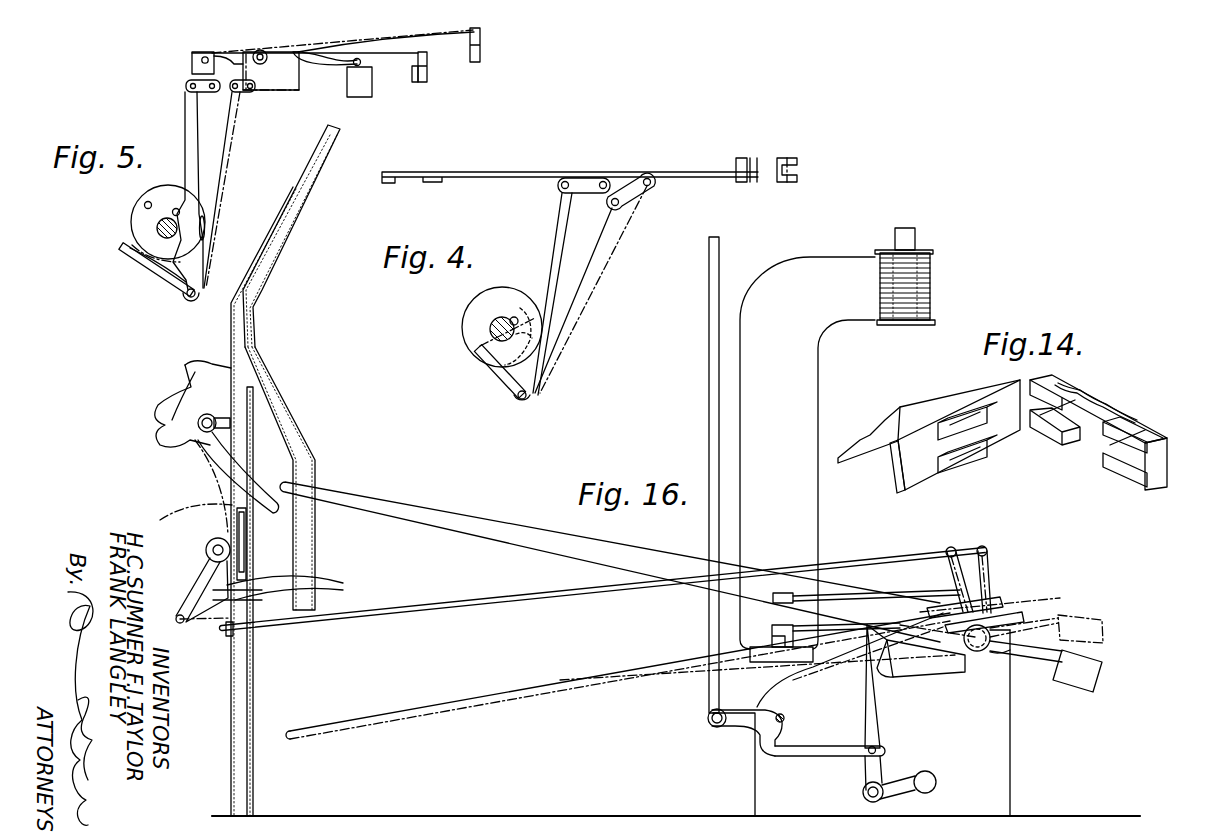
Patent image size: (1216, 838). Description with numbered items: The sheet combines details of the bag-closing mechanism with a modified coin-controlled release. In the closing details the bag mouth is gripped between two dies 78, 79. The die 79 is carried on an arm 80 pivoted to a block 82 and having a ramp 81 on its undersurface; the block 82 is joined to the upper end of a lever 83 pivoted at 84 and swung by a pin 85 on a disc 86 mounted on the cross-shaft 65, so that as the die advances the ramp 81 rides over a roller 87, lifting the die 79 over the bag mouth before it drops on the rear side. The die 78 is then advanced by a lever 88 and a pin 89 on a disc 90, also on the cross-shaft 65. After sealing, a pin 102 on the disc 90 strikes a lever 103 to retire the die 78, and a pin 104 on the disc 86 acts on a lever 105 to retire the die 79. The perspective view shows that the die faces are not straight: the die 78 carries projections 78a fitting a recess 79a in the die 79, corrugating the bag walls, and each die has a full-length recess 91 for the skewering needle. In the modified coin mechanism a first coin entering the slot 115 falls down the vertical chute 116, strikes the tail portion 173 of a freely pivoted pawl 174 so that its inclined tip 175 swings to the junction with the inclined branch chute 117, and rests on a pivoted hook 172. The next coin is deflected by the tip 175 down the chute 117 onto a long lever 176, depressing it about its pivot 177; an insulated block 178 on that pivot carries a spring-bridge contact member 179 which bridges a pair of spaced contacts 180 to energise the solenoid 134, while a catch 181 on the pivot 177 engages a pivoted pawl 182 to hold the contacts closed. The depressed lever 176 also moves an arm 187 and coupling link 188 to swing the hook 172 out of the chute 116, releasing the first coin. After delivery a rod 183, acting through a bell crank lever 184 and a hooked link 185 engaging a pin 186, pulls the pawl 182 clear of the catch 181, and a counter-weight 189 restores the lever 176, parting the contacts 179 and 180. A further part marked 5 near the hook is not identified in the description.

In FIG. 5, the arm 80 is at (193, 53).
In FIG. 5, the block 82 is at (202, 64).
In FIG. 5, the lever 83 is at (190, 132).
In FIG. 5, the pin 85 is at (175, 209).
In FIG. 5, the pin 104 is at (145, 204).
In FIG. 5, the disc 86 is at (138, 227).
In FIG. 5, the cross-shaft 65 is at (157, 237).
In FIG. 4, the cross-shaft 65 is at (490, 330).
In FIG. 5, the lever 105 is at (132, 253).
In FIG. 5, the pivot 84 is at (197, 292).
In FIG. 5, the ramp 81 is at (318, 57).
In FIG. 5, the roller 87 is at (361, 60).
In FIG. 5, the recess 91 is at (414, 72).
In FIG. 4, the recess 91 is at (760, 163).
In FIG. 14, the recess 91 is at (967, 430).
In FIG. 5, the die 79 is at (427, 80).
In FIG. 14, the die 79 is at (1163, 458).
In FIG. 4, the die 78 is at (752, 180).
In FIG. 14, the die 78 is at (927, 457).
In FIG. 14, the projections 78a is at (963, 458).
In FIG. 14, the recess 79a is at (1087, 423).
In FIG. 4, the lever 88 is at (557, 225).
In FIG. 4, the pin 89 is at (513, 316).
In FIG. 4, the disc 90 is at (475, 307).
In FIG. 4, the pin 102 is at (531, 337).
In FIG. 4, the lever 103 is at (490, 363).
In FIG. 16, the coin slot 115 is at (313, 167).
In FIG. 16, the vertical coin chute 116 is at (238, 455).
In FIG. 16, the inclined branch coin chute 117 is at (305, 463).
In FIG. 16, the inclined tip 175 is at (214, 425).
In FIG. 16, the pawl 174 is at (193, 457).
In FIG. 16, the tail portion 173 is at (203, 513).
In FIG. 16, the lever 5 is at (206, 553).
In FIG. 16, the pivoted hook 172 is at (304, 585).
In FIG. 16, the lever 176 is at (535, 540).
In FIG. 16, the coupling rod 188 is at (507, 602).
In FIG. 16, the rod 183 is at (708, 275).
In FIG. 16, the solenoid 134 is at (930, 290).
In FIG. 16, the spring-bridge contact member 179 is at (783, 593).
In FIG. 16, the spaced contacts 180 is at (777, 643).
In FIG. 16, the arm 187 is at (980, 577).
In FIG. 16, the insulated block 178 is at (1023, 618).
In FIG. 16, the pivot 177 is at (977, 653).
In FIG. 16, the catch 181 is at (922, 652).
In FIG. 16, the pivoted pawl 182 is at (870, 735).
In FIG. 16, the bell crank lever 184 is at (742, 720).
In FIG. 16, the hooked link 185 is at (827, 746).
In FIG. 16, the pin 186 is at (870, 752).
In FIG. 16, the counter-weight 189 is at (1073, 640).